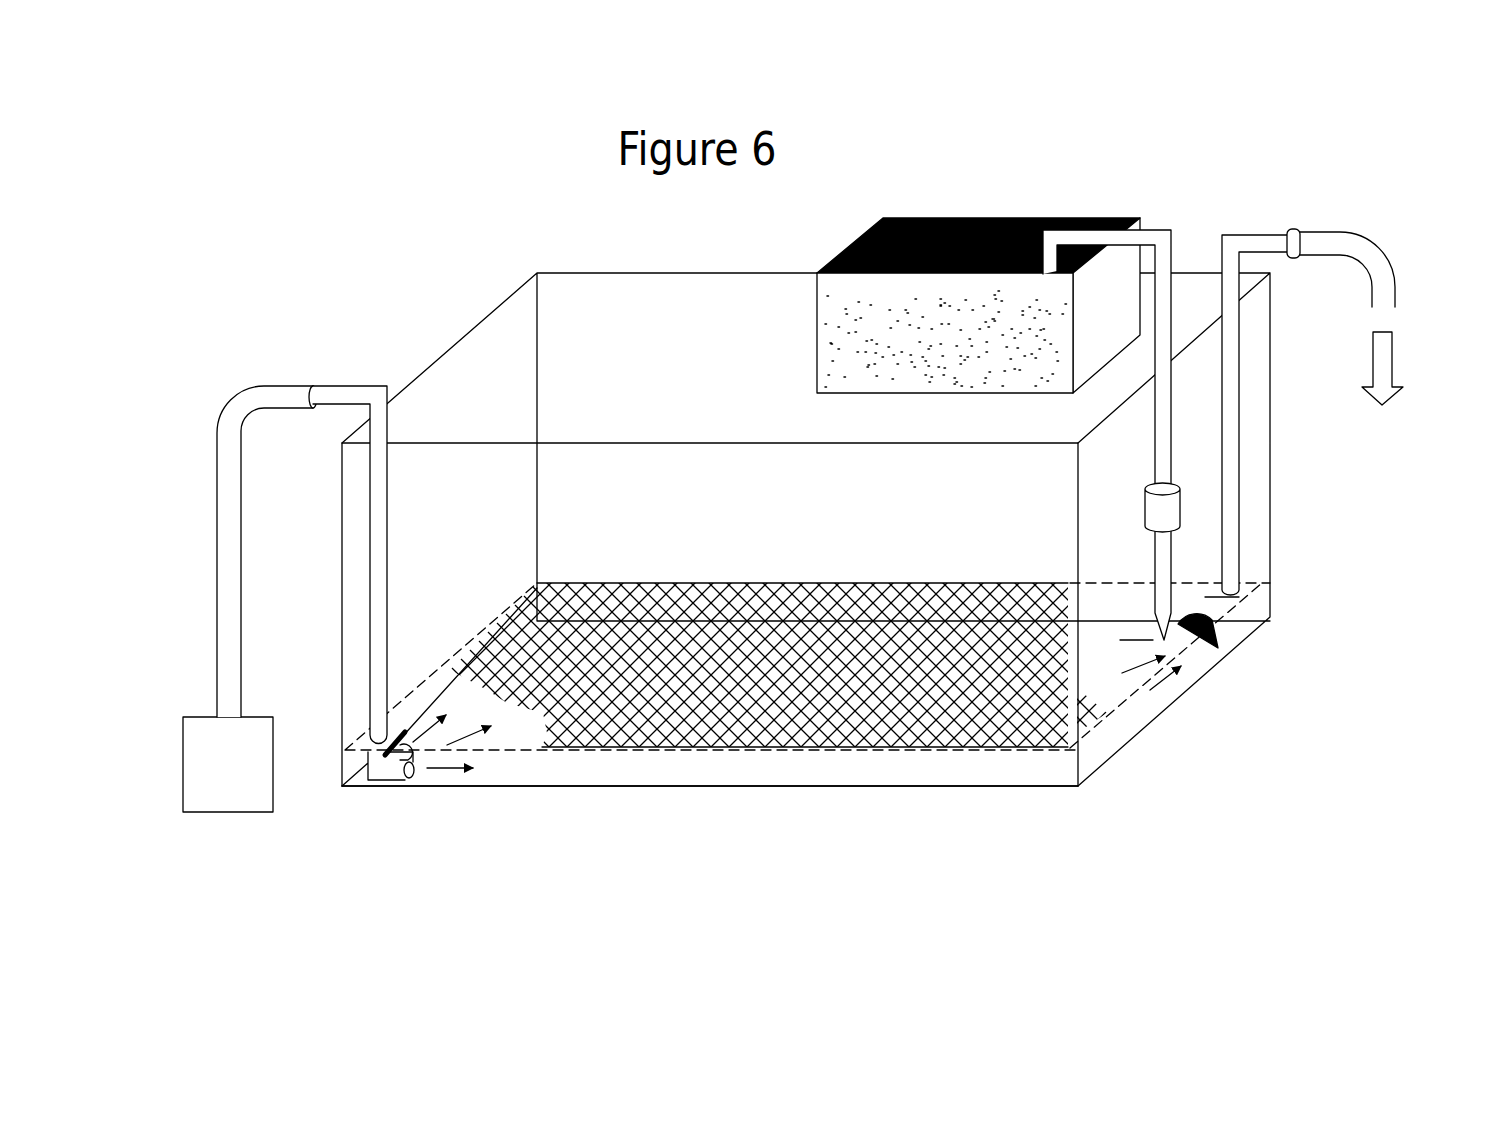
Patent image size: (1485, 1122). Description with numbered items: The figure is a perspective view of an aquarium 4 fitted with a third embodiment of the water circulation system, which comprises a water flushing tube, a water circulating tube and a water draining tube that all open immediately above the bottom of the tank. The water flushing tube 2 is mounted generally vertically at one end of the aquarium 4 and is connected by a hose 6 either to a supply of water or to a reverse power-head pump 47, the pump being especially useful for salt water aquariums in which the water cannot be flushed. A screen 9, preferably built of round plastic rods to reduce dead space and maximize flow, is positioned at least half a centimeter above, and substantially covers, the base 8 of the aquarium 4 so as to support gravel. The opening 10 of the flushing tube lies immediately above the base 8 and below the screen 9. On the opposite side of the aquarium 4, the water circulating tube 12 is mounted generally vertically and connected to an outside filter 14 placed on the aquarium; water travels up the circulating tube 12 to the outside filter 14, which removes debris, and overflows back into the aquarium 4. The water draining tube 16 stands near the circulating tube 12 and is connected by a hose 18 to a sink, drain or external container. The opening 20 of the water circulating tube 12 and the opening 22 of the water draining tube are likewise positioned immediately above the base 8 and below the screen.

The water flushing tube 2 is at (358, 386).
The aquarium 4 is at (786, 792).
The hose 6 is at (240, 393).
The base 8 is at (968, 790).
The screen 9 is at (658, 720).
The opening of water flushing tube 10 is at (410, 775).
The water circulating tube 12 is at (1173, 230).
The outside filter 14 is at (1003, 218).
The water draining tube 16 is at (1282, 235).
The hose 18 is at (1397, 272).
The opening of water circulation tube 20 is at (1160, 640).
The opening of water draining tube 22 is at (1240, 630).
The reverse power-head pump 47 is at (242, 812).